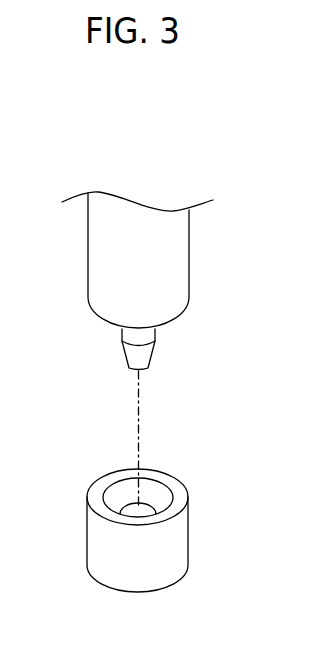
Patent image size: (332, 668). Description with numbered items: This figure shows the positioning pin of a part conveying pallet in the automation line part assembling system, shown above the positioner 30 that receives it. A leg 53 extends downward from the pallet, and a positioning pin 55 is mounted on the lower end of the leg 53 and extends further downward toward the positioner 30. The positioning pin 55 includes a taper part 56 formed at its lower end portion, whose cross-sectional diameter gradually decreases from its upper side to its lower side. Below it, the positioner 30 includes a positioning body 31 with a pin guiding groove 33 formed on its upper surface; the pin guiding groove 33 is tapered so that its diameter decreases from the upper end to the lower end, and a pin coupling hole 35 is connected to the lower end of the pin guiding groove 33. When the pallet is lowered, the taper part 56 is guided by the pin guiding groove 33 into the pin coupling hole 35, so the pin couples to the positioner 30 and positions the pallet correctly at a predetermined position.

The positioner 30 is at (155, 509).
The positioning body 31 is at (97, 544).
The pin guiding groove 33 is at (157, 495).
The pin coupling hole 35 is at (130, 511).
The leg 53 is at (175, 247).
The positioning pin 55 is at (122, 349).
The taper part 56 is at (143, 352).